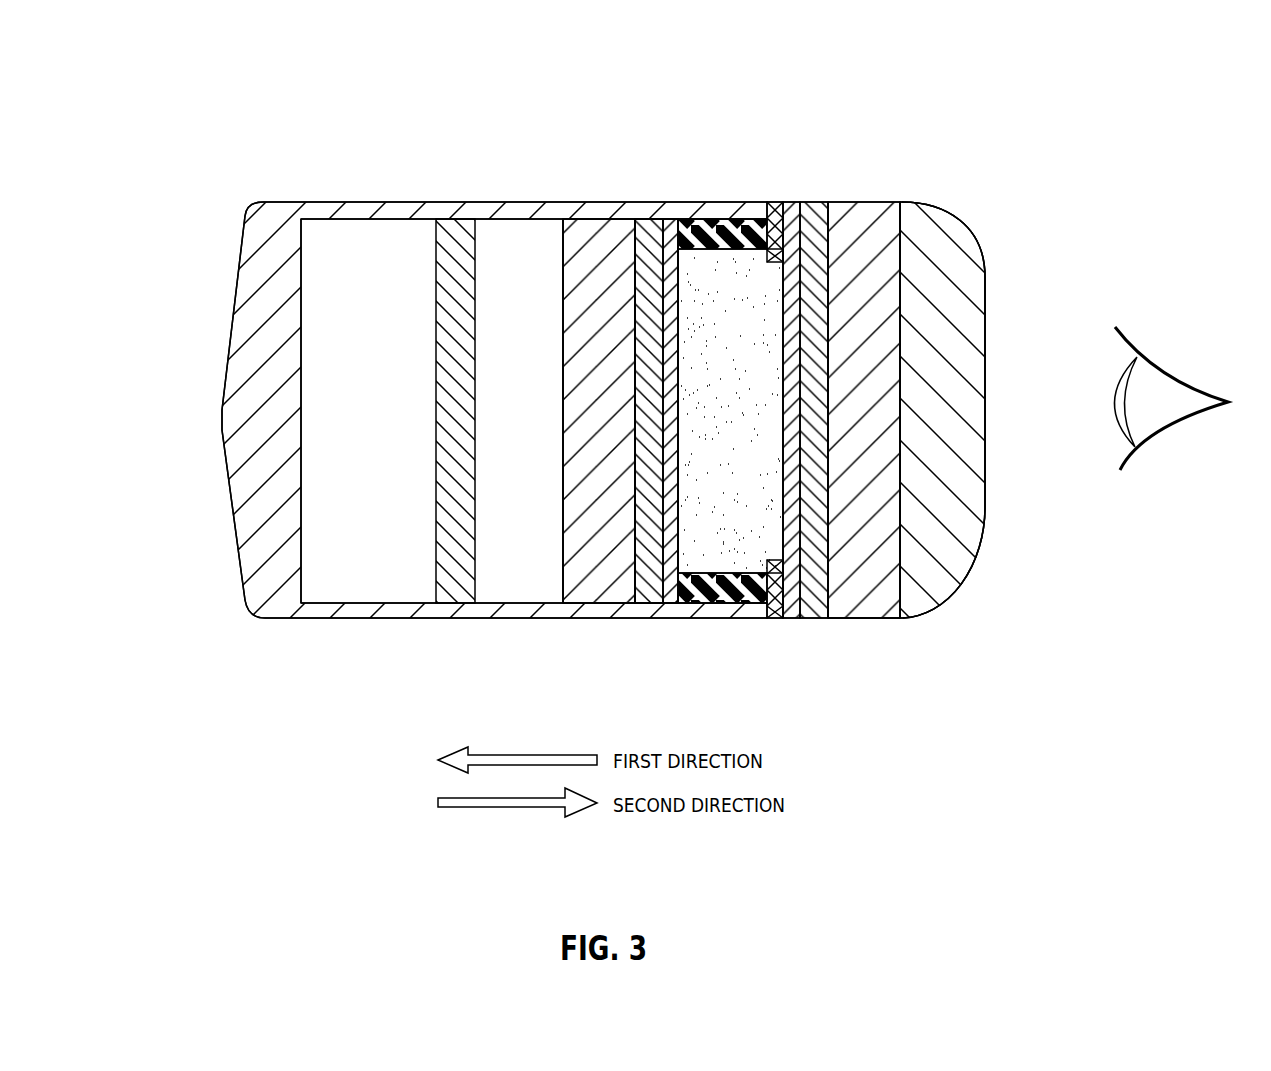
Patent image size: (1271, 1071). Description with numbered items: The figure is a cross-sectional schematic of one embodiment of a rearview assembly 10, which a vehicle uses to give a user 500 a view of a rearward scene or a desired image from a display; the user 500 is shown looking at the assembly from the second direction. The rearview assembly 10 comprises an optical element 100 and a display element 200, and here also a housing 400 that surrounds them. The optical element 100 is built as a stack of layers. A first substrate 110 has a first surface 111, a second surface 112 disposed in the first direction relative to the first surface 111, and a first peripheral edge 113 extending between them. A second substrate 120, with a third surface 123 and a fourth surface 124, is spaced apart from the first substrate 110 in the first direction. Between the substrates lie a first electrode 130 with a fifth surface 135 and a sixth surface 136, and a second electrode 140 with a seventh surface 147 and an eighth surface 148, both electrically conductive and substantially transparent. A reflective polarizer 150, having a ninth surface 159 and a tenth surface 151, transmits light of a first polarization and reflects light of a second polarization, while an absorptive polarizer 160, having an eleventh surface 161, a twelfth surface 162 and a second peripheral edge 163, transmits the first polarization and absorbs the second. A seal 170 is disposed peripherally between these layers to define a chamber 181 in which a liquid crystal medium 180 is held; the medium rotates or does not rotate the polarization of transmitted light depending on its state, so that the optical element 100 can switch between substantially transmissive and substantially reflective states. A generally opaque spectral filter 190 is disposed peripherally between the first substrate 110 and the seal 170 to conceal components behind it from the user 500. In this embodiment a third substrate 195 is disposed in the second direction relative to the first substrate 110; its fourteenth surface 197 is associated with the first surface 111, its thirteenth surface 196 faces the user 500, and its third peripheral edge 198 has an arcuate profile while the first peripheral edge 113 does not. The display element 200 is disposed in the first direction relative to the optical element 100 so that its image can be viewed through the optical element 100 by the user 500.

The rearview assembly 10 is at (155, 91).
The optical element 100 is at (991, 148).
The first substrate 110 is at (870, 218).
The first surface 111 is at (900, 585).
The second surface 112 is at (828, 540).
The first peripheral edge 113 is at (872, 618).
The second substrate 120 is at (600, 217).
The third surface 123 is at (635, 490).
The fourth surface 124 is at (565, 557).
The first electrode 130 is at (813, 217).
The fifth surface 135 is at (828, 502).
The sixth surface 136 is at (800, 457).
The second electrode 140 is at (640, 217).
The seventh surface 147 is at (662, 415).
The eighth surface 148 is at (637, 455).
The reflective polarizer 150 is at (674, 217).
The tenth surface 151 is at (662, 337).
The ninth surface 159 is at (662, 300).
The absorptive polarizer 160 is at (792, 215).
The eleventh surface 161 is at (800, 420).
The twelfth surface 162 is at (783, 390).
The second peripheral edge 163 is at (790, 618).
The seal 170 is at (740, 218).
The liquid crystal medium 180 is at (708, 272).
The chamber 181 is at (745, 418).
The spectral filter 190 is at (777, 212).
The third substrate 195 is at (943, 232).
The thirteenth surface 196 is at (986, 316).
The fourteenth surface 197 is at (900, 272).
The third peripheral edge 198 is at (932, 618).
The display element 200 is at (460, 228).
The housing 400 is at (245, 332).
The user 500 is at (1169, 336).